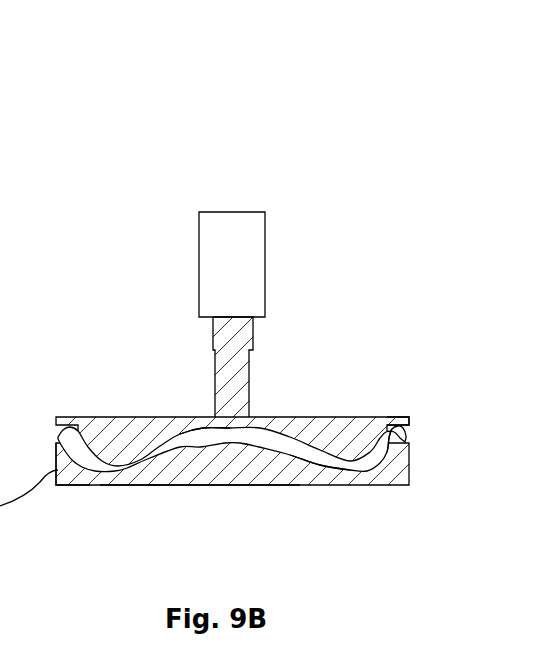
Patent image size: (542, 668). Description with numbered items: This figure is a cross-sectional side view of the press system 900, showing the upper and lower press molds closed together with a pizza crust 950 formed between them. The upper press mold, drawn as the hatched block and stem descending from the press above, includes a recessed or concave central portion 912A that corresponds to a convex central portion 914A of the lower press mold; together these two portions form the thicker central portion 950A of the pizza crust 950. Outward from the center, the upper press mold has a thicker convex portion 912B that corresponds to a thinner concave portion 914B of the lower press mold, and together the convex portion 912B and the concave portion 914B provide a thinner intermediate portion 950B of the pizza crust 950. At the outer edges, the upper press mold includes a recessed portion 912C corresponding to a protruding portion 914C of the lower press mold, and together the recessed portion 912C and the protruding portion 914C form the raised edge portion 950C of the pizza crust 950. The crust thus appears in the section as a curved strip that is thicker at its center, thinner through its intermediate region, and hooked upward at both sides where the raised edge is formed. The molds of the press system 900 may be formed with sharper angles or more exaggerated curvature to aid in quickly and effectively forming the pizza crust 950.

The press system 900 is at (125, 137).
The concave central portion 912A is at (266, 418).
The convex portion 912B is at (350, 427).
The recessed portion 912C is at (400, 418).
The convex central portion 914A is at (222, 467).
The concave portion 914B is at (137, 473).
The protruding portion 914C is at (58, 470).
The pizza crust 950 is at (57, 437).
The central portion of the pizza crust 950A is at (203, 430).
The thinner intermediate portion 950B is at (317, 456).
The raised edge portion 950C is at (392, 444).